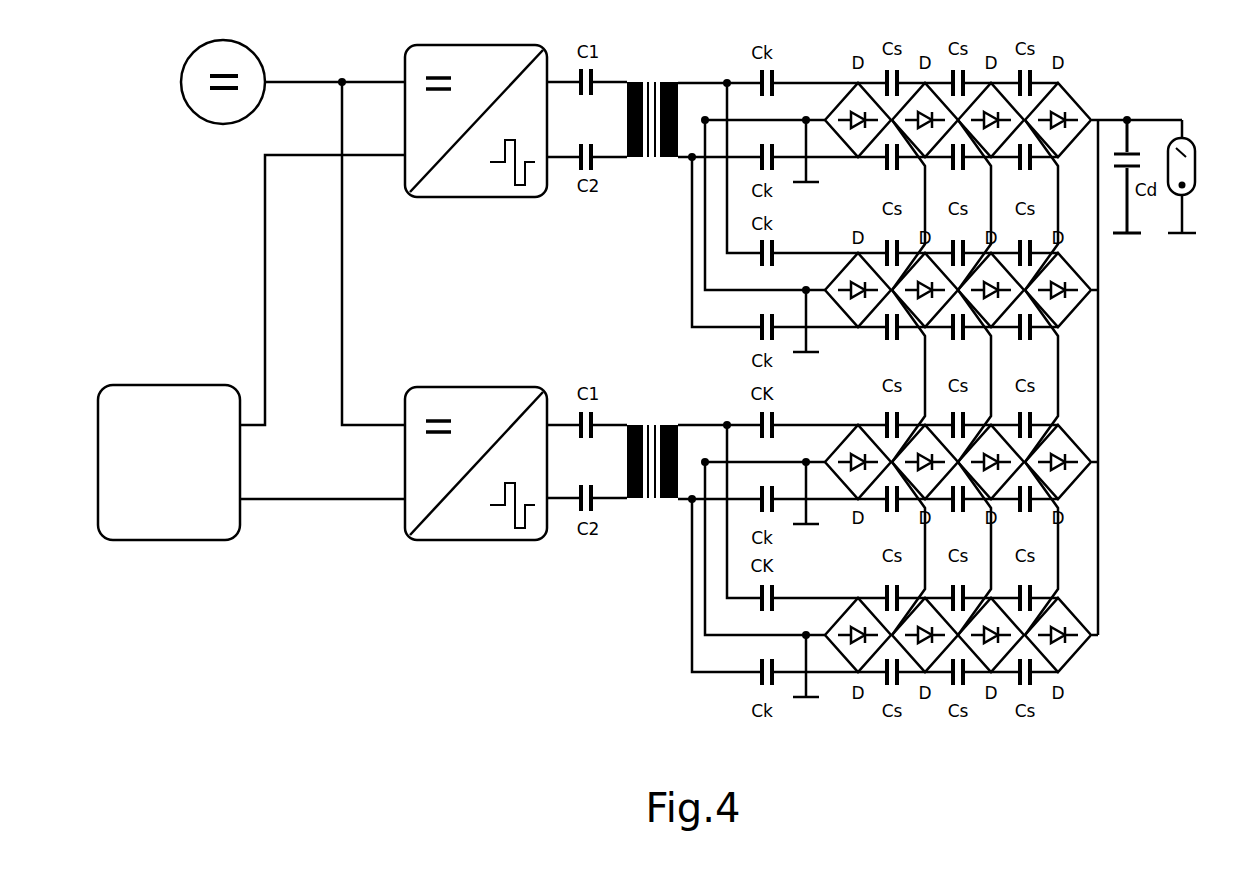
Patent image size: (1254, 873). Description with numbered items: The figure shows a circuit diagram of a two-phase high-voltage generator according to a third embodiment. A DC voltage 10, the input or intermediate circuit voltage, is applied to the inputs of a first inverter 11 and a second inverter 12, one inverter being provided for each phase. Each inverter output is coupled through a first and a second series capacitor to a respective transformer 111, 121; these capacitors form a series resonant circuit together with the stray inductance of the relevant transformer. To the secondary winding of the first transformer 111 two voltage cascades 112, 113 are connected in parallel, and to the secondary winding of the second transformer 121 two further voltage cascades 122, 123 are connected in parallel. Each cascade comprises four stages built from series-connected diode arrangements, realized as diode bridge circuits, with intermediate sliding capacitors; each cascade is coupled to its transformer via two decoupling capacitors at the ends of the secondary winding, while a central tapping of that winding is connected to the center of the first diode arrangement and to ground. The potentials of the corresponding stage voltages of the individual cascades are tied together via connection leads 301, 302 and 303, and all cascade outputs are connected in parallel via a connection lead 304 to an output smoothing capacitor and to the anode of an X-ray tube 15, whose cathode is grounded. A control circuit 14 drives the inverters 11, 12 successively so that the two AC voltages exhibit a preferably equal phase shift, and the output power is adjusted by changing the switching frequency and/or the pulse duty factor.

The DC voltage 10 is at (293, 232).
The first inverter 11 is at (499, 121).
The second inverter 12 is at (499, 463).
The control circuit 14 is at (251, 347).
The X-ray tube 15 is at (1196, 176).
The first transformer 111 is at (652, 104).
The second transformer 121 is at (652, 447).
The first voltage cascade 112 is at (930, 124).
The second voltage cascade of the first phase 113 is at (914, 217).
The voltage cascade of the second phase 122 is at (907, 466).
The second voltage cascade of the second phase 123 is at (914, 561).
The connection lead 301 is at (927, 377).
The connection lead 302 is at (993, 377).
The connection lead 303 is at (1060, 377).
The connection lead 304 is at (1118, 377).